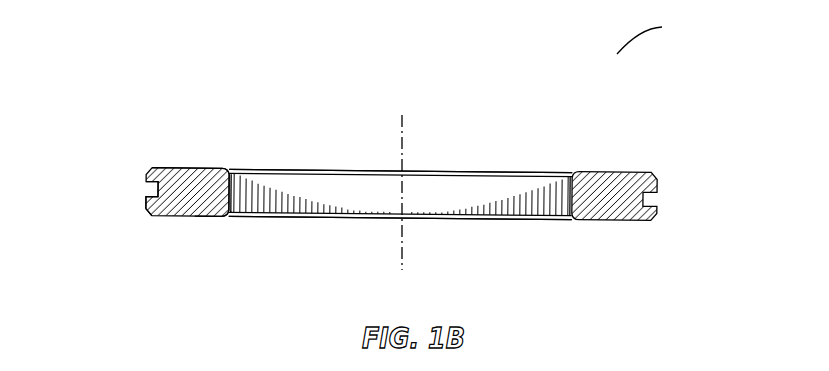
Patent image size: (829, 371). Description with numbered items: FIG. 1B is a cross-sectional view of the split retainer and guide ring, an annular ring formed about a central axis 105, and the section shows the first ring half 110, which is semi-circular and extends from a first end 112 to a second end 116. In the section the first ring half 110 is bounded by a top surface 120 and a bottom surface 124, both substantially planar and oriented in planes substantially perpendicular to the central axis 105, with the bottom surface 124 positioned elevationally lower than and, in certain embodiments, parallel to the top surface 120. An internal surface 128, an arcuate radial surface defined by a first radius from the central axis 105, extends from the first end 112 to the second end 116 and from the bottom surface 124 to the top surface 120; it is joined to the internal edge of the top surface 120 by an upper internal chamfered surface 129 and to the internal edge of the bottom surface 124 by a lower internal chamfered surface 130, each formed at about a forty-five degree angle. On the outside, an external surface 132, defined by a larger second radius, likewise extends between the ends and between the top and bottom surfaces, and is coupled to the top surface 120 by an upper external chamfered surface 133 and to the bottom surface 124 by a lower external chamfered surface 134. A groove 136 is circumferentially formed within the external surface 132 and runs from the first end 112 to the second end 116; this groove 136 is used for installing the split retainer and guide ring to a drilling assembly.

The first ring half 110 is at (617, 54).
The central axis 105 is at (402, 142).
The first end 112 is at (190, 172).
The second end 116 is at (612, 173).
The top surface 120 is at (208, 170).
The bottom surface 124 is at (205, 219).
The internal surface 128 is at (337, 185).
The upper internal chamfered surface 129 is at (316, 170).
The lower internal chamfered surface 130 is at (318, 220).
The external surface 132 is at (148, 205).
The upper external chamfered surface 133 is at (152, 168).
The lower external chamfered surface 134 is at (150, 222).
The groove 136 is at (152, 192).